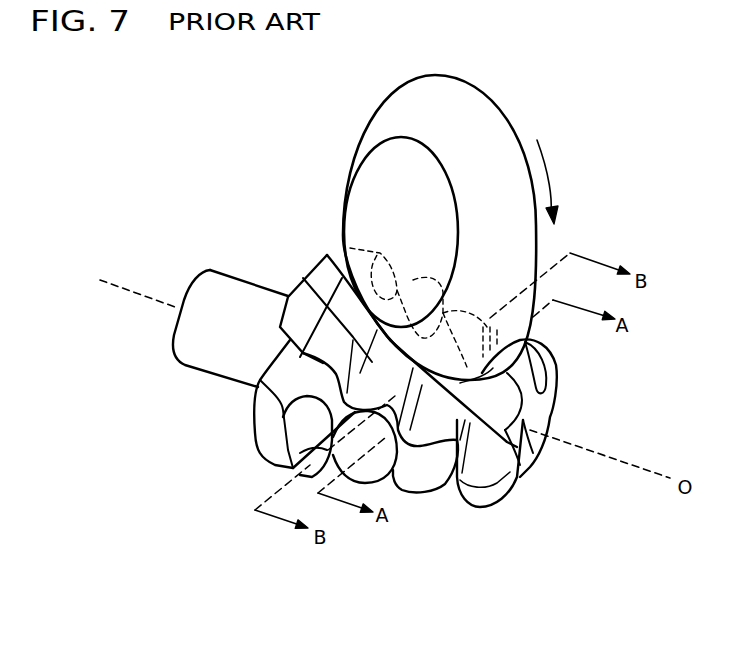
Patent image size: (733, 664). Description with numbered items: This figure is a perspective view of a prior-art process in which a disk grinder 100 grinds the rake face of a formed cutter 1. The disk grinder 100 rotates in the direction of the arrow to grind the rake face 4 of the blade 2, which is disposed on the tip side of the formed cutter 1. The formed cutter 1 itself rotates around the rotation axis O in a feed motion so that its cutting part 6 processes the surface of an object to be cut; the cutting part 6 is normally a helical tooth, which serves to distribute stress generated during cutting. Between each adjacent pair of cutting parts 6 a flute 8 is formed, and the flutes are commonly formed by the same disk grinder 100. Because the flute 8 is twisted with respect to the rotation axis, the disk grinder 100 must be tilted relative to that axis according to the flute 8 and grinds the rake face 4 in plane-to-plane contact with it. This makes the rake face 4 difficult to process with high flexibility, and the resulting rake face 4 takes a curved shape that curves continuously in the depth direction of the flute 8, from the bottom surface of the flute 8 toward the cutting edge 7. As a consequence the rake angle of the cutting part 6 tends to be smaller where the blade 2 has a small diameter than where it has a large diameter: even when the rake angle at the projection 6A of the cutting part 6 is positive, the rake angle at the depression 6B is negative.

The formed cutter 1 is at (153, 491).
The blade 2 is at (451, 534).
The rake face 4 is at (530, 418).
The cutting part 6 is at (483, 477).
The projection 6A is at (413, 493).
The depression 6B is at (303, 278).
The cutting edge 7 is at (505, 374).
The flute 8 is at (510, 432).
The disk grinder 100 is at (487, 93).